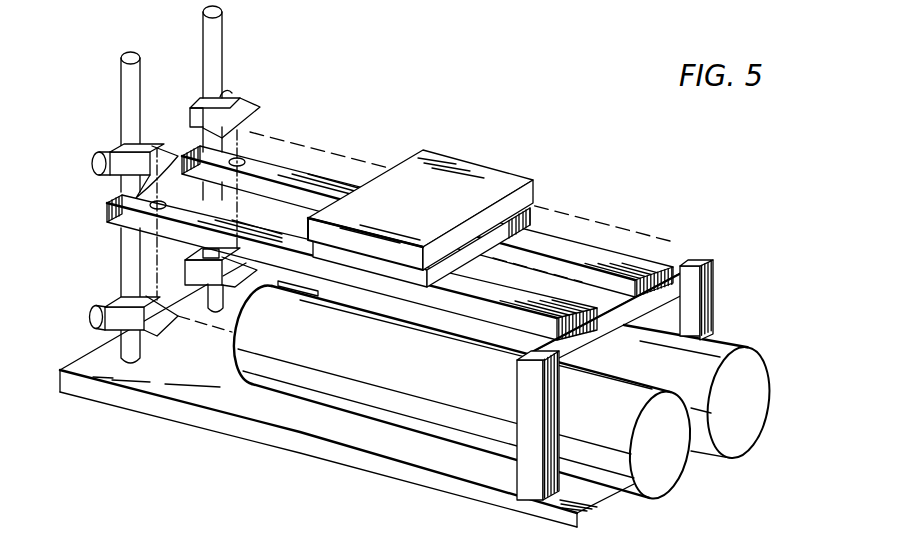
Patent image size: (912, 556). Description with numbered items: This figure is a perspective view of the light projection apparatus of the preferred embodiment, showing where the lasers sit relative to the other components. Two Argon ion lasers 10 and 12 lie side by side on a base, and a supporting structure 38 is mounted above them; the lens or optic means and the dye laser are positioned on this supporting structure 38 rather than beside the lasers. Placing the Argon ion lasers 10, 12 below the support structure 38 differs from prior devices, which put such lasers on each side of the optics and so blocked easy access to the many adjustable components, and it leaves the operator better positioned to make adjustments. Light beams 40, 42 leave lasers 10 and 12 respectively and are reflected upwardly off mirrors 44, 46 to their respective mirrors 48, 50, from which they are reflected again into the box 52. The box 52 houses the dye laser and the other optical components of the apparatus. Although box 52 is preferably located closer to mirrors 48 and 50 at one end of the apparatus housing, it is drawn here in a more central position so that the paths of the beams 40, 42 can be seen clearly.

The Argon ion laser 10 is at (340, 405).
The Argon ion laser 12 is at (711, 347).
The supporting structure 38 is at (534, 303).
The light beam 40 is at (186, 156).
The light beam 42 is at (303, 143).
The mirror 44 is at (125, 340).
The mirror 46 is at (218, 268).
The mirror 48 is at (110, 212).
The mirror 50 is at (263, 117).
The box 52 is at (397, 187).